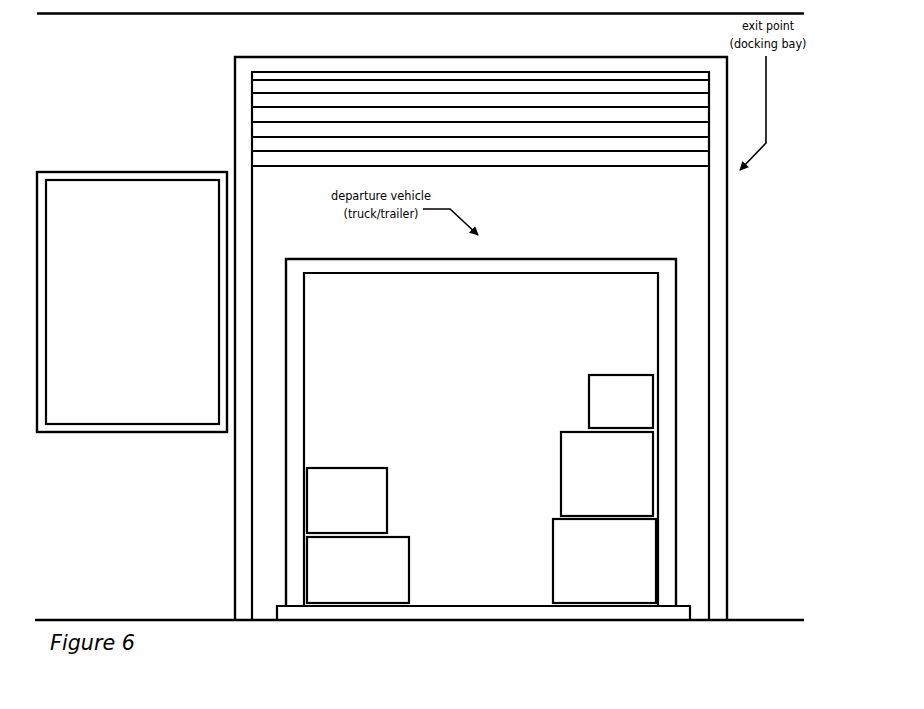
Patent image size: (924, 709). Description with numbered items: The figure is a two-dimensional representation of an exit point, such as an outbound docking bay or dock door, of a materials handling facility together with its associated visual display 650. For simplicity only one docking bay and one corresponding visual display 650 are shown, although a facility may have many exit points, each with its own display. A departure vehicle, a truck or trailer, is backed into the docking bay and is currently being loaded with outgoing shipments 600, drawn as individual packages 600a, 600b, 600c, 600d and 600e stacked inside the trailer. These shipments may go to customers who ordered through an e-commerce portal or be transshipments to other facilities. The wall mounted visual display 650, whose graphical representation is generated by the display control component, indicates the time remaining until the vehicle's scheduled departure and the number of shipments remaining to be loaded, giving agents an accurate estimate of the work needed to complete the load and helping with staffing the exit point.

The visual display 650 is at (121, 163).
The outgoing shipments 600 is at (481, 489).
The outgoing shipment 600a is at (347, 500).
The outgoing shipment 600b is at (358, 570).
The outgoing shipment 600c is at (604, 561).
The outgoing shipment 600d is at (607, 474).
The outgoing shipment 600e is at (621, 401).